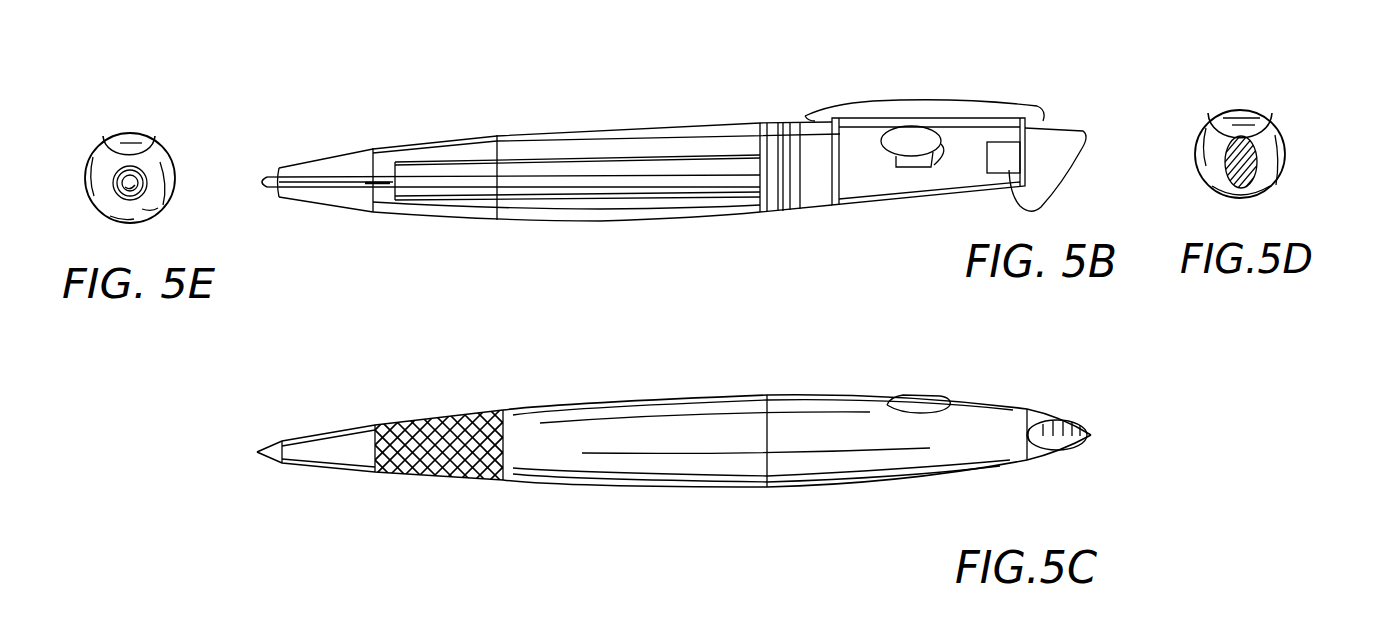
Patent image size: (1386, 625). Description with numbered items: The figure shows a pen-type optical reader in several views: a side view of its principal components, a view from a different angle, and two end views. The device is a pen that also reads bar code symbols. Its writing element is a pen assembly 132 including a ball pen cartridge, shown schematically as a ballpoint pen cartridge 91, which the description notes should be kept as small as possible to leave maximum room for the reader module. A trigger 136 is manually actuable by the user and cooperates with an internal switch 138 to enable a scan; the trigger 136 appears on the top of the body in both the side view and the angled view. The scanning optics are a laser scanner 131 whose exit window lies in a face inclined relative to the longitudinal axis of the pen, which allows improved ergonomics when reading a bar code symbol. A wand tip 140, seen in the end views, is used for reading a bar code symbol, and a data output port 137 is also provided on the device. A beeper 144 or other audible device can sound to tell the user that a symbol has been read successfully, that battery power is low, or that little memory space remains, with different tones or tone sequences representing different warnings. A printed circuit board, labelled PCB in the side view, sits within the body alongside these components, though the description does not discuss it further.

In FIG. 5B, the ballpoint pen cartridge 91 is at (442, 183).
In FIG. 5B, the laser scanner 131 is at (1040, 208).
In FIG. 5B, the pen assembly 132 is at (750, 102).
In FIG. 5B, the trigger 136 is at (912, 137).
In FIG. 5C, the trigger 136 is at (922, 413).
In FIG. 5D, the data output port 137 is at (1260, 188).
In FIG. 5C, the data output port 137 is at (1092, 441).
In FIG. 5B, the internal switch 138 is at (937, 165).
In FIG. 5D, the wand tip 140 is at (1252, 152).
In FIG. 5B, the beeper 144 is at (817, 188).
In FIG. 5B, the printed circuit board PCB is at (970, 163).